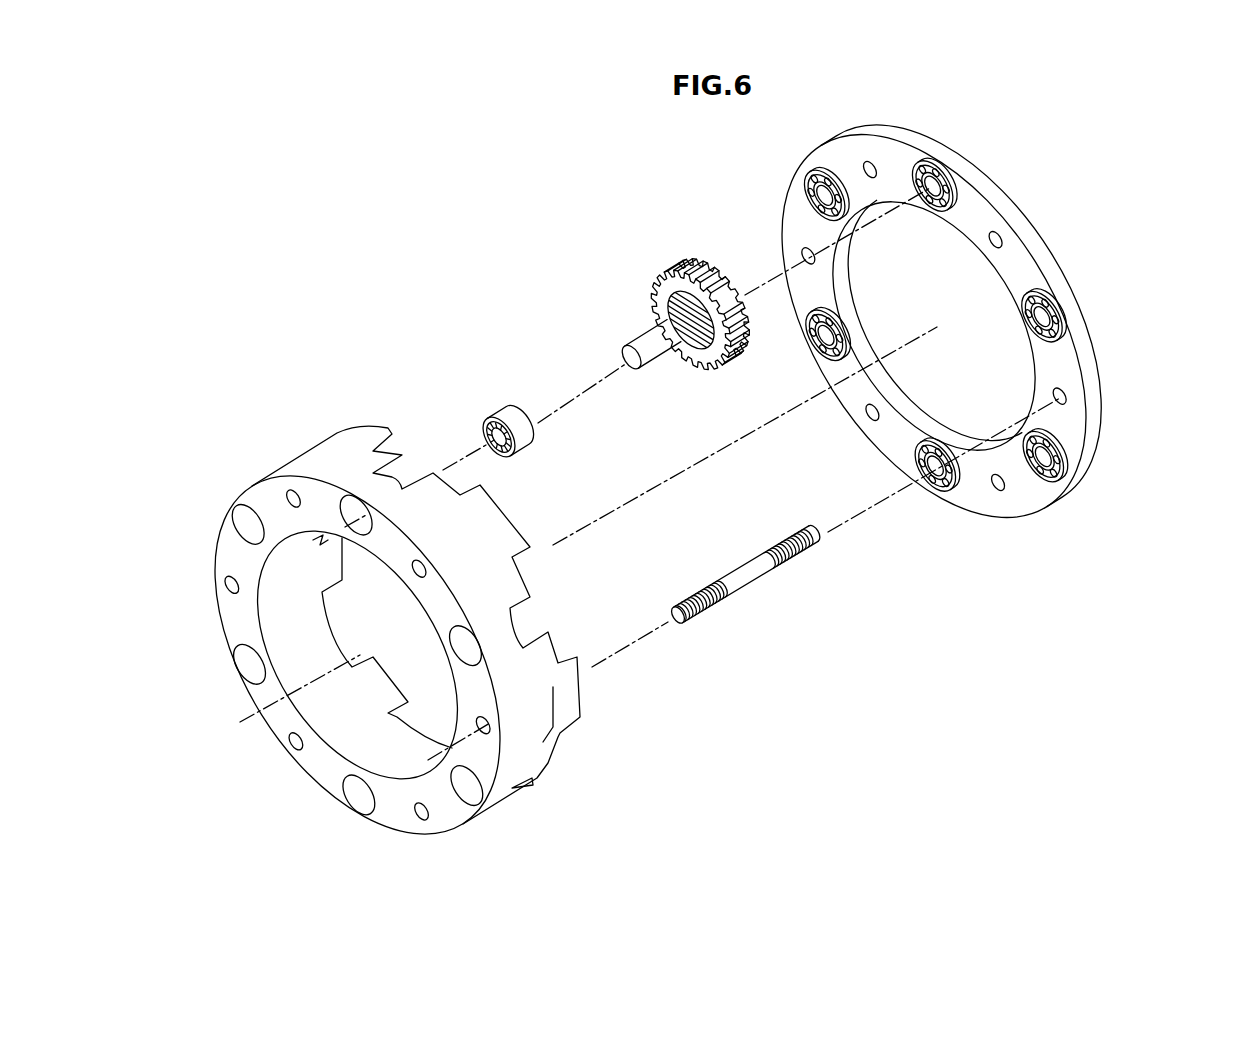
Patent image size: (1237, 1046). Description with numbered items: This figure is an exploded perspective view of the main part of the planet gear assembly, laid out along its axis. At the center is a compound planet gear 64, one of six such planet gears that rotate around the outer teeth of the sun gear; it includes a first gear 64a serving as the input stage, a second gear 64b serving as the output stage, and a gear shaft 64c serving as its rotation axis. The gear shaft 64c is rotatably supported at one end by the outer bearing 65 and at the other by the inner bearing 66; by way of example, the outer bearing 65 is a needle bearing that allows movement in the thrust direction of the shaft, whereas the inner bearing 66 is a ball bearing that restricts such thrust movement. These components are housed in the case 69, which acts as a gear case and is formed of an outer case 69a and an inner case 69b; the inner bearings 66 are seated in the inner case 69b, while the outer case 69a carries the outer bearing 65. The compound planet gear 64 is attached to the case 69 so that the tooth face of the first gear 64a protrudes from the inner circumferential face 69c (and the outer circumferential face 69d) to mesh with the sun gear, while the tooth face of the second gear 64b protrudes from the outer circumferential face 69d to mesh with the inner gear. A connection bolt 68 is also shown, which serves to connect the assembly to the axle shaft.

The compound planet gear 64 is at (673, 304).
The first gear 64a is at (664, 276).
The second gear 64b is at (702, 362).
The gear shaft 64c is at (641, 338).
The outer bearing 65 is at (497, 415).
The inner bearing 66 is at (803, 178).
The connection bolt 68 is at (755, 580).
The case 69 is at (700, 862).
The outer case 69a is at (443, 655).
The inner case 69b is at (1030, 500).
The inner circumferential face 69c is at (345, 708).
The outer circumferential face 69d is at (558, 693).